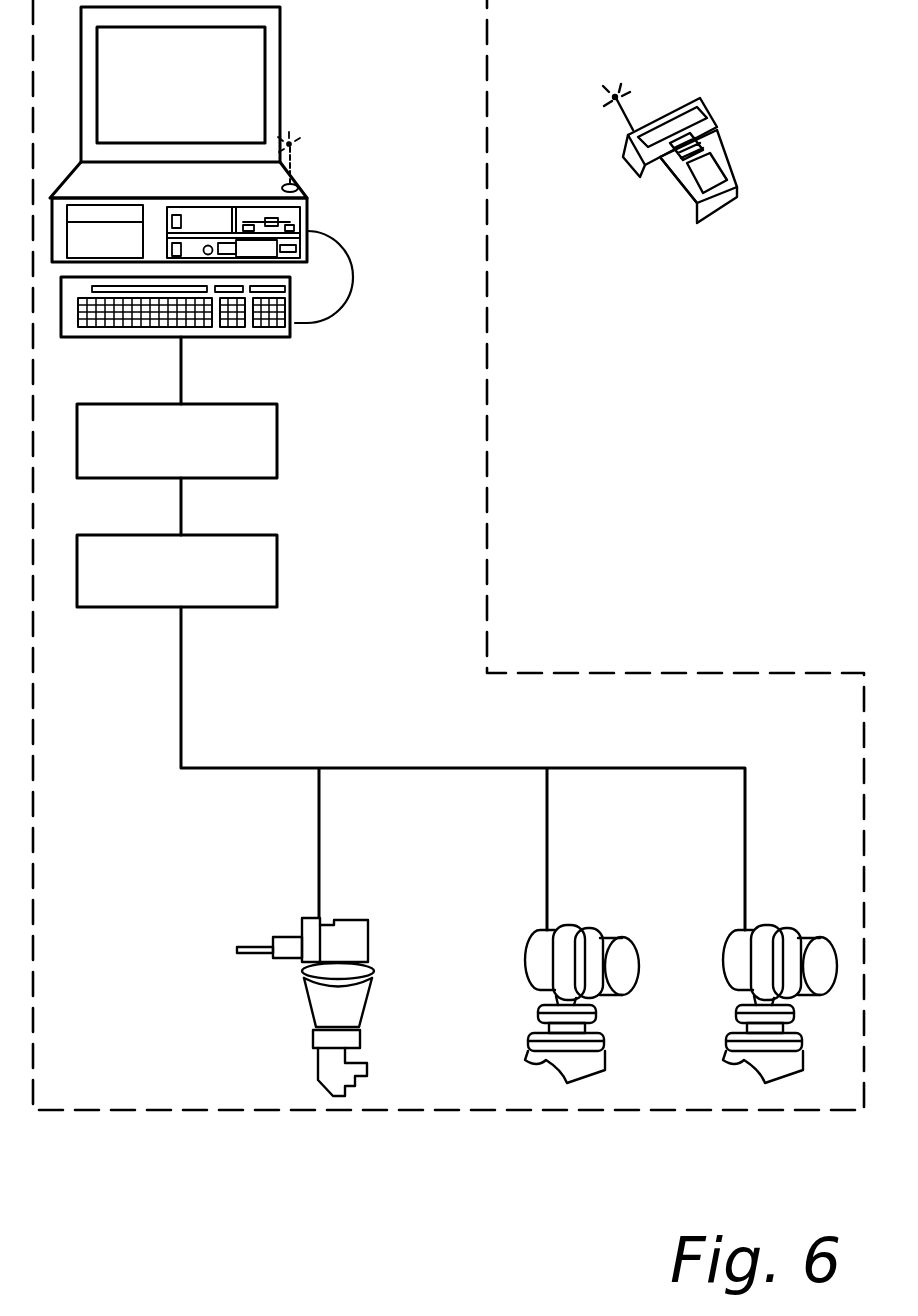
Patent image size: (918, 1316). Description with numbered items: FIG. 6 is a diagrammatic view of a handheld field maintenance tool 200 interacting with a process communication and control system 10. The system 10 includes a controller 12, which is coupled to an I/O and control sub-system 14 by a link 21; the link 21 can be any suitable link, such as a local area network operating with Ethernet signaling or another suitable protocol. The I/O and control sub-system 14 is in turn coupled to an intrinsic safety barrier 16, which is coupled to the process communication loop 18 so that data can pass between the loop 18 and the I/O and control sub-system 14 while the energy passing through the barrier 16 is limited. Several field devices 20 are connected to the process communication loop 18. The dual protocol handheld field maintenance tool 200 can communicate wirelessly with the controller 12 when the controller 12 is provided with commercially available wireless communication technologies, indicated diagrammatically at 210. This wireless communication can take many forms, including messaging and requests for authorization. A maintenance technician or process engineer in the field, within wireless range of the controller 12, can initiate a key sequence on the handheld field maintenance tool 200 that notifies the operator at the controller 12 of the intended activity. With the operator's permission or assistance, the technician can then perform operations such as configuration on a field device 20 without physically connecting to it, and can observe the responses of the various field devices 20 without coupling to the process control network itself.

The system 10 is at (657, 648).
The controller 12 is at (278, 98).
The wireless communication technologies 210 is at (294, 182).
The handheld field maintenance tool 200 is at (712, 112).
The link 21 is at (181, 384).
The I/O and control sub-system 14 is at (277, 443).
The intrinsic safety barrier 16 is at (277, 575).
The process communication loop 18 is at (488, 767).
The field devices 20 is at (320, 993).